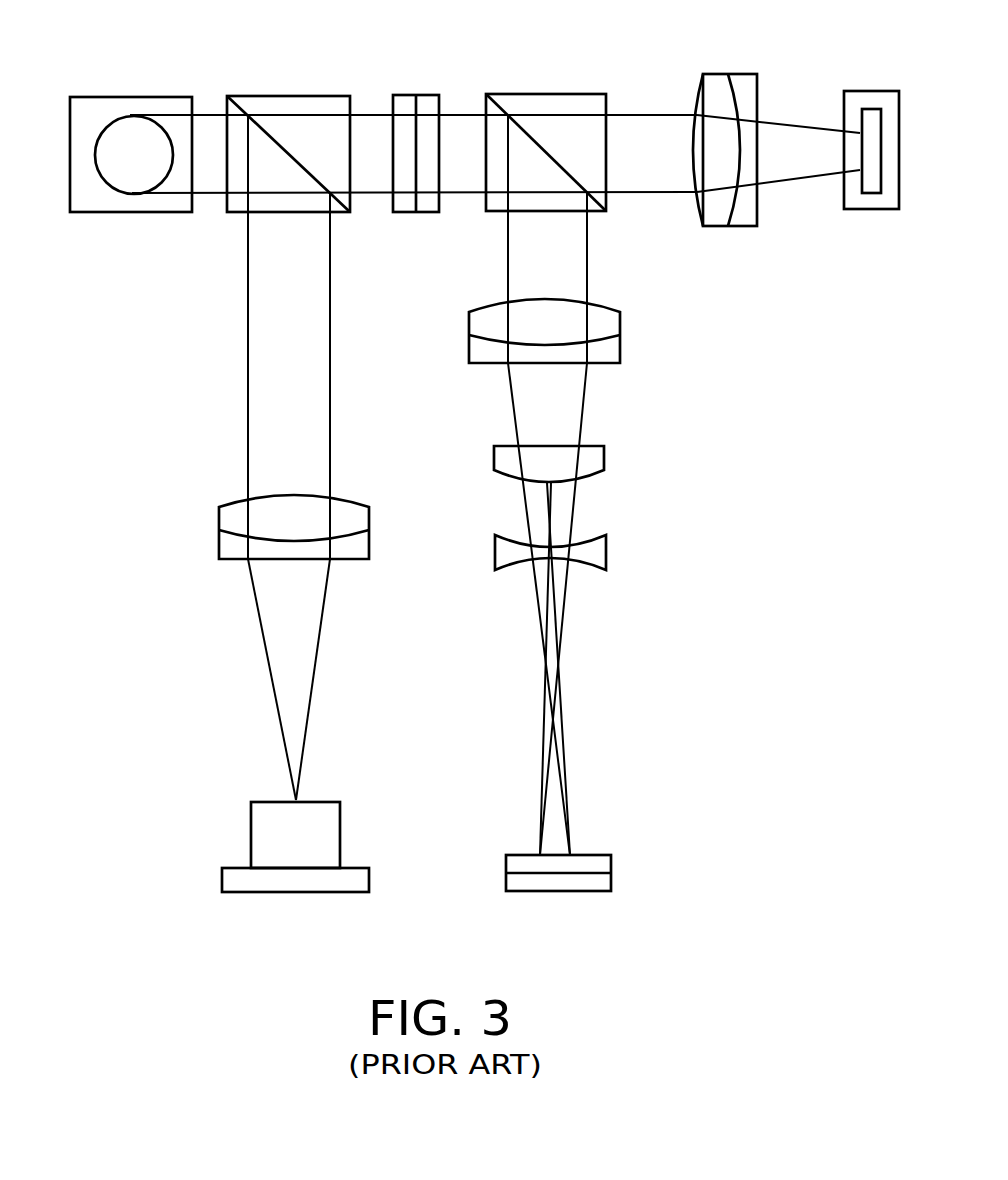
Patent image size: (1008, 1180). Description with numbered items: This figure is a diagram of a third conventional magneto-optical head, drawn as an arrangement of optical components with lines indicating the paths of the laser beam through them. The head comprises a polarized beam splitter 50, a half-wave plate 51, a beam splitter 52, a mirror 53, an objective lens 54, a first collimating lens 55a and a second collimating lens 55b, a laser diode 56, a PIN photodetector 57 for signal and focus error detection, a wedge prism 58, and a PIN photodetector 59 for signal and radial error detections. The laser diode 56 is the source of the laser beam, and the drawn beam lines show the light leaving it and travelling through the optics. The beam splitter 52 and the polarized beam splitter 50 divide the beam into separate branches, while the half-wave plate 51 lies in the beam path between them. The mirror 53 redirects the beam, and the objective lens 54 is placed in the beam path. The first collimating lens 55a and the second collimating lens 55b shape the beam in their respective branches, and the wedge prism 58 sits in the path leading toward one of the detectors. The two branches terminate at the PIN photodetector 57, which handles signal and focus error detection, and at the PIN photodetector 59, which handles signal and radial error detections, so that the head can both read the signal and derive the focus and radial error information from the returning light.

The polarized beam splitter 50 is at (583, 92).
The half-wave plate 51 is at (412, 92).
The beam splitter 52 is at (295, 96).
The mirror 53 is at (68, 120).
The objective lens 54 is at (110, 192).
The first collimating lens 55a is at (218, 550).
The second collimating lens 55b is at (620, 322).
The laser diode 56 is at (250, 835).
The PIN photodetector 57 is at (612, 873).
The wedge prism 58 is at (605, 453).
The PIN photodetector 59 is at (870, 210).